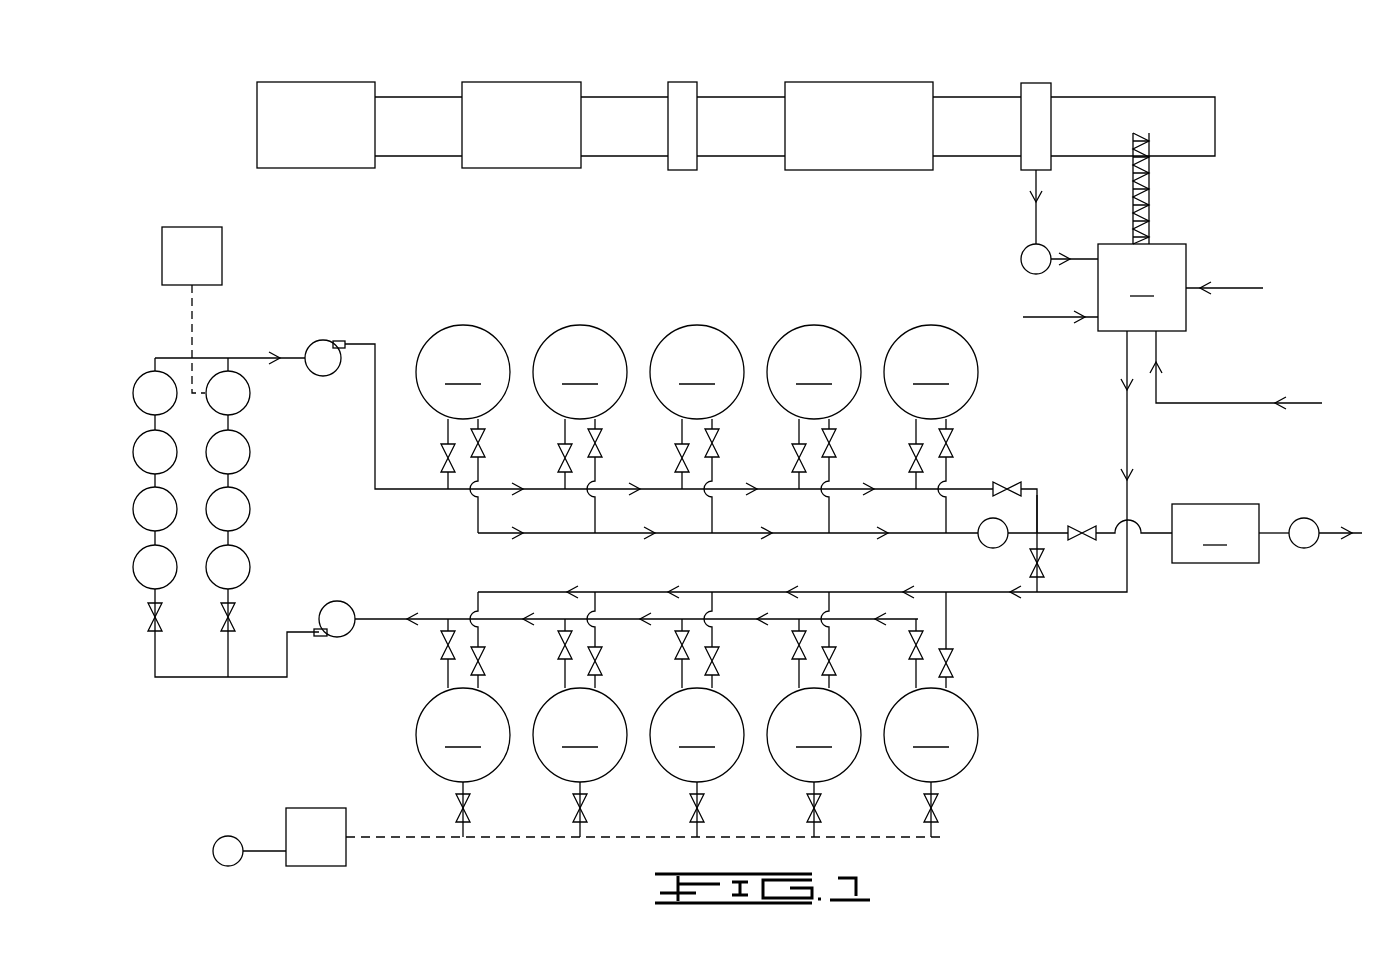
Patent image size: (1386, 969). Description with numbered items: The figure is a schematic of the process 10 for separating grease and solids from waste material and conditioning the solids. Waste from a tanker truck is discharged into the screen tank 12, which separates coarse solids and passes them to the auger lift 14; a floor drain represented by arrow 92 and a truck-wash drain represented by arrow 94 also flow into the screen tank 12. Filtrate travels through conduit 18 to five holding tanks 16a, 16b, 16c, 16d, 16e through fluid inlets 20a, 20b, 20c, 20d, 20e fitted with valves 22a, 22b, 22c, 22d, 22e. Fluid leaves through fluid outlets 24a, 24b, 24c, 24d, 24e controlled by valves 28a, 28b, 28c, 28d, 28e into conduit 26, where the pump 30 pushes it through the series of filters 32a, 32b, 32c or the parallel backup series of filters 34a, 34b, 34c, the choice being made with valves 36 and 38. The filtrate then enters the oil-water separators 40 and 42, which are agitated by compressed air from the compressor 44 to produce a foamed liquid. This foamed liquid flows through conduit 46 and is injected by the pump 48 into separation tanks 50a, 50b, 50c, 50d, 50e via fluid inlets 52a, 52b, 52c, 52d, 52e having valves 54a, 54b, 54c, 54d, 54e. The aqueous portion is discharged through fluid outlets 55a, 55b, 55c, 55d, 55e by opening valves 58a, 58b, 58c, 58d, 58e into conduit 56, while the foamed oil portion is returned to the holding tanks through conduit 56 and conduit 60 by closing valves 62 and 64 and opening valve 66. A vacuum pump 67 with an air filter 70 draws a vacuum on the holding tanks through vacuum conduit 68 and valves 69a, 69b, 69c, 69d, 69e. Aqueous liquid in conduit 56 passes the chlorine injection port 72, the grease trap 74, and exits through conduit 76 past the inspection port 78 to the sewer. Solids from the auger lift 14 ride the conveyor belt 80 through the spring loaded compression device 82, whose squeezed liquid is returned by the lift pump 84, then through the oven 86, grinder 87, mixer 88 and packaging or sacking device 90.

The process 10 is at (1244, 183).
The screen tank 12 is at (1142, 287).
The auger lift 14 is at (1150, 210).
The holding tank 16a is at (931, 735).
The holding tank 16b is at (814, 735).
The holding tank 16c is at (697, 735).
The holding tank 16d is at (580, 735).
The holding tank 16e is at (463, 735).
The conduit 18 is at (1128, 441).
The fluid inlet 20a is at (948, 686).
The fluid inlet 20b is at (831, 686).
The fluid inlet 20c is at (714, 686).
The fluid inlet 20d is at (597, 686).
The fluid inlet 20e is at (480, 686).
The valve 22a is at (954, 663).
The valve 22b is at (837, 661).
The valve 22c is at (720, 661).
The valve 22d is at (603, 661).
The valve 22e is at (486, 661).
The fluid outlet 24a is at (916, 680).
The fluid outlet 24b is at (799, 680).
The fluid outlet 24c is at (682, 680).
The fluid outlet 24d is at (565, 680).
The fluid outlet 24e is at (448, 680).
The conduit 26 is at (418, 617).
The valve 28a is at (909, 645).
The valve 28b is at (792, 645).
The valve 28c is at (675, 645).
The valve 28d is at (558, 645).
The valve 28e is at (441, 645).
The pump 30 is at (340, 641).
The filter 32a is at (139, 556).
The filter 32b is at (139, 498).
The filter 32c is at (139, 441).
The filter 34a is at (250, 578).
The filter 34b is at (250, 520).
The filter 34c is at (250, 462).
The valve 36 is at (148, 627).
The valve 38 is at (237, 619).
The oil-water separator 40 is at (138, 383).
The oil-water separator 42 is at (248, 402).
The compressor 44 is at (222, 258).
The conduit 46 is at (238, 358).
The pump 48 is at (320, 340).
The separation tank 50a is at (463, 372).
The separation tank 50b is at (580, 372).
The separation tank 50c is at (697, 372).
The separation tank 50d is at (814, 372).
The separation tank 50e is at (931, 372).
The fluid inlet 52a is at (448, 437).
The fluid inlet 52b is at (565, 437).
The fluid inlet 52c is at (682, 437).
The fluid inlet 52d is at (799, 437).
The fluid inlet 52e is at (916, 437).
The valve 54a is at (441, 472).
The valve 54b is at (558, 472).
The valve 54c is at (675, 472).
The valve 54d is at (792, 472).
The valve 54e is at (909, 472).
The fluid outlet 55a is at (481, 428).
The fluid outlet 55b is at (598, 428).
The fluid outlet 55c is at (715, 428).
The fluid outlet 55d is at (832, 428).
The fluid outlet 55e is at (949, 428).
The conduit 56 is at (620, 536).
The valve 58a is at (486, 448).
The valve 58b is at (603, 448).
The valve 58c is at (720, 448).
The valve 58d is at (837, 448).
The valve 58e is at (954, 448).
The conduit 60 is at (1040, 507).
The valve 62 is at (1015, 482).
The valve 64 is at (1080, 540).
The valve 66 is at (1030, 568).
The vacuum pump 67 is at (318, 808).
The vacuum conduit 68 is at (388, 840).
The valve 69a is at (938, 814).
The valve 69b is at (821, 814).
The valve 69c is at (704, 814).
The valve 69d is at (587, 814).
The valve 69e is at (470, 814).
The air filter 70 is at (222, 838).
The chlorine injection port 72 is at (981, 546).
The grease trap 74 is at (1230, 533).
The conduit 76 is at (1328, 541).
The inspection port 78 is at (1306, 518).
The conveyor belt 80 is at (1190, 115).
The spring loaded compression device 82 is at (1037, 83).
The lift pump 84 is at (1028, 250).
The oven 86 is at (858, 82).
The grinder 87 is at (685, 82).
The mixer 88 is at (515, 82).
The packaging or sacking device 90 is at (316, 82).
The arrow 92 is at (1042, 317).
The arrow 94 is at (1232, 288).